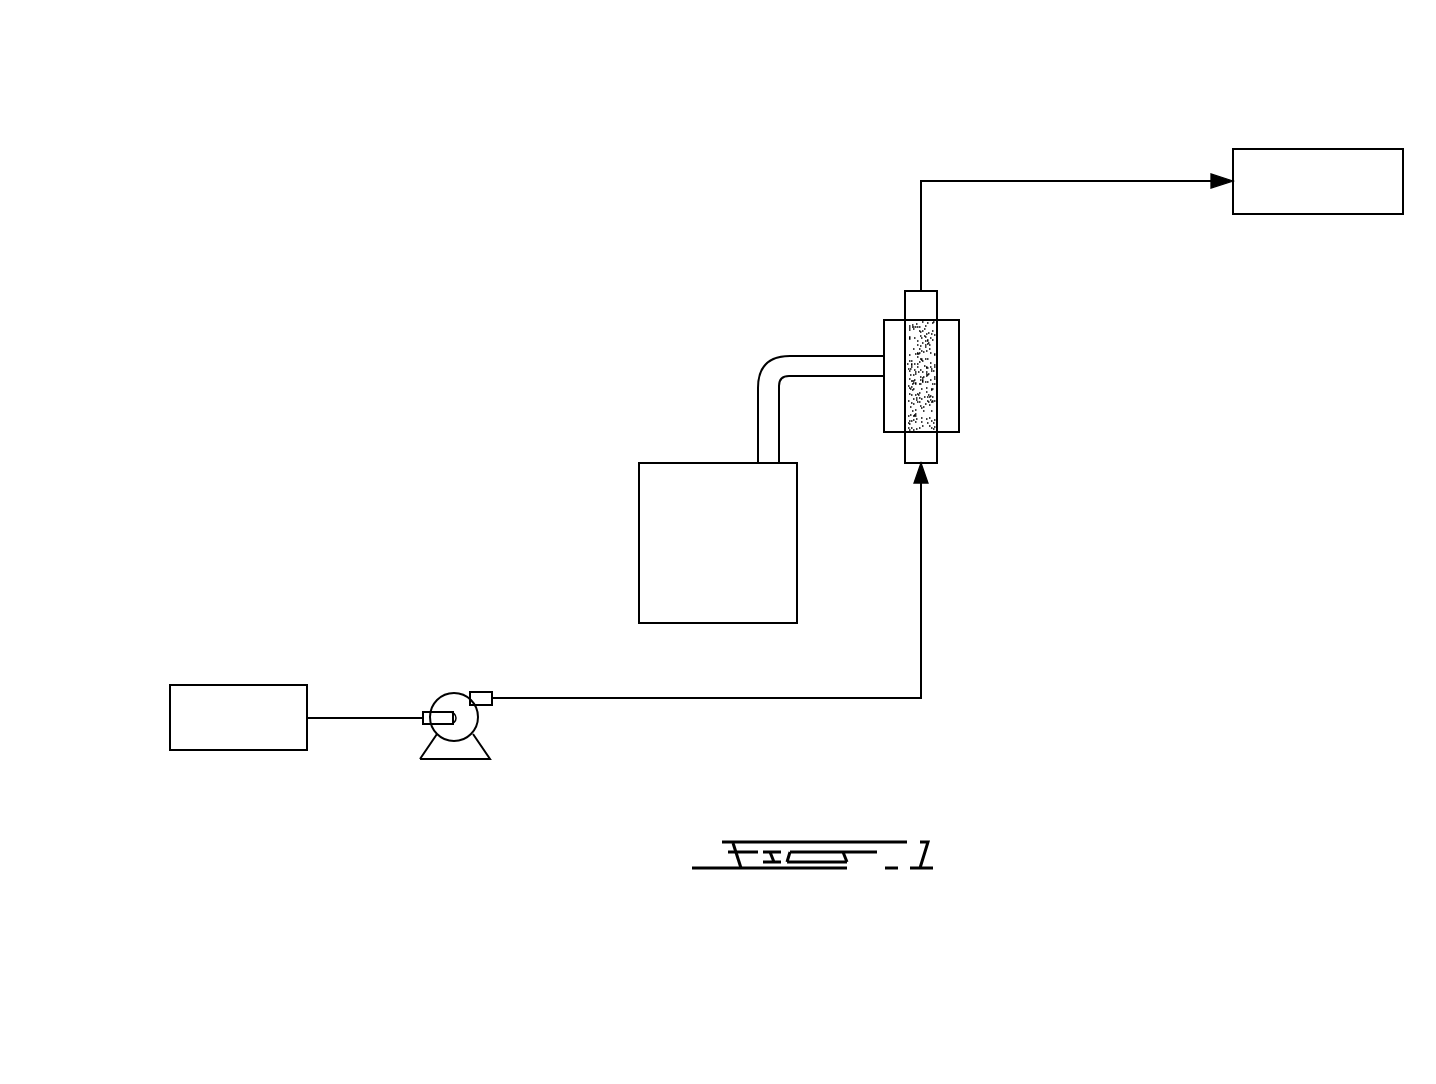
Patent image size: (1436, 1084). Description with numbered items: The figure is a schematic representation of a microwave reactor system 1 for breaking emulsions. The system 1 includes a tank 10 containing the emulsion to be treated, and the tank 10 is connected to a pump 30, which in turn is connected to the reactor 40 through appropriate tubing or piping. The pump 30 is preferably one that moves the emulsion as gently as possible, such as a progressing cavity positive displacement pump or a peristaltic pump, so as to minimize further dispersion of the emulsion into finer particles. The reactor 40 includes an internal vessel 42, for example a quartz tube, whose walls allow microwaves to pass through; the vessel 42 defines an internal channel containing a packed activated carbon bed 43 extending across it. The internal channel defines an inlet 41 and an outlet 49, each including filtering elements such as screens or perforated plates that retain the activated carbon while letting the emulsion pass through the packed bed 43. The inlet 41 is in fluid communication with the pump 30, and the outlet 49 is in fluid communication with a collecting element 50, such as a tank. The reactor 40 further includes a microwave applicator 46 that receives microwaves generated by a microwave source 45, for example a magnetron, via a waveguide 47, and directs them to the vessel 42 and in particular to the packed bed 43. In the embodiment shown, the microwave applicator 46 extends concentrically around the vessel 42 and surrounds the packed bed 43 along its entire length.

The microwave reactor system 1 is at (467, 167).
The tank 10 is at (241, 750).
The pump 30 is at (480, 720).
The reactor 40 is at (653, 350).
The inlet 41 is at (932, 464).
The internal vessel 42 is at (937, 450).
The packed activated carbon bed 43 is at (937, 383).
The microwave source 45 is at (639, 550).
The microwave applicator 46 is at (959, 330).
The waveguide 47 is at (782, 356).
The outlet 49 is at (930, 288).
The collecting element 50 is at (1317, 214).